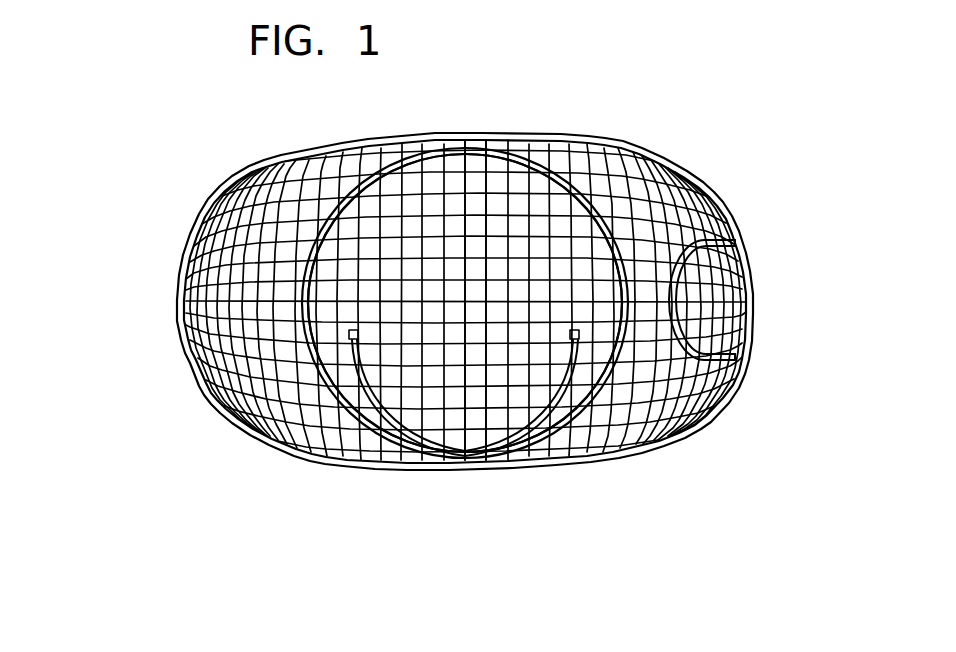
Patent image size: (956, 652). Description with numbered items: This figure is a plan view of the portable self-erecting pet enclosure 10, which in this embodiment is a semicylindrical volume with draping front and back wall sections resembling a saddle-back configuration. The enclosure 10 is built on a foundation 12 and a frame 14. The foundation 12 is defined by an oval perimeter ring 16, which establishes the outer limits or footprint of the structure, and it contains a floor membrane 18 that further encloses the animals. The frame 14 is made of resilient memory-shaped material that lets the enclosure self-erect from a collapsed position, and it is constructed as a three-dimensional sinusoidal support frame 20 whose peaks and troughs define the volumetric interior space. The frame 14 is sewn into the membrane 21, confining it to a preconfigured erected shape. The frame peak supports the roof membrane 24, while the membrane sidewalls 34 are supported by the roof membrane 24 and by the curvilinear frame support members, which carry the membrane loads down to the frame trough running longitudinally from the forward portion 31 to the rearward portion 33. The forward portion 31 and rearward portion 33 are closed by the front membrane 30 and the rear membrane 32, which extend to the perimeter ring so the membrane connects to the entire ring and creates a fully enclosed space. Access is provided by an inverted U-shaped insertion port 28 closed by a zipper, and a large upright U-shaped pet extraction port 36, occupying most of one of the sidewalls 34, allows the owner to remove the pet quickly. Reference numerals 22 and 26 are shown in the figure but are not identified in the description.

The portable self-erecting pet enclosure 10 is at (290, 130).
The foundation 12 is at (224, 192).
The frame 14 is at (320, 197).
The oval perimeter ring 16 is at (198, 232).
The floor membrane 18 is at (222, 253).
The three-dimensional sinusoidal support frame 20 is at (585, 172).
The membrane 21 is at (245, 372).
The hoop 22 is at (437, 165).
The roof membrane 24 is at (497, 277).
The strap 26 is at (413, 310).
The insertion port 28 is at (720, 273).
The front membrane 30 is at (720, 323).
The forward portion 31 is at (755, 303).
The rear membrane 32 is at (215, 333).
The rearward portion 33 is at (178, 302).
The membrane sidewalls 34 is at (455, 170).
The pet extraction port 36 is at (477, 397).